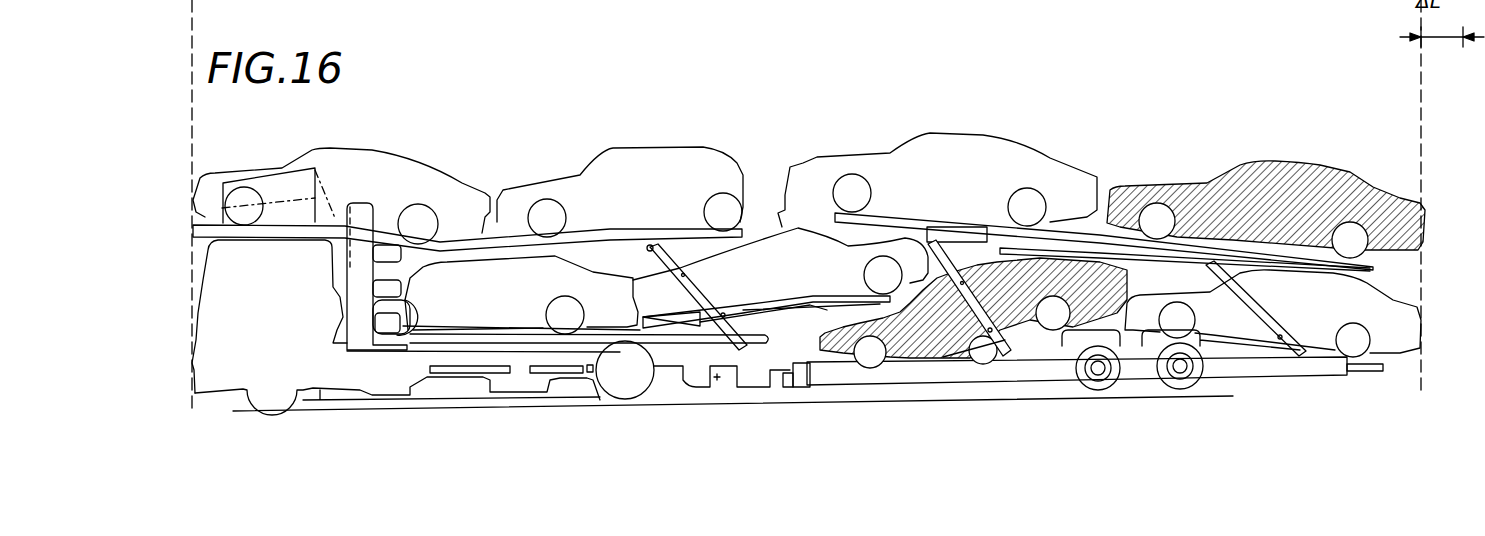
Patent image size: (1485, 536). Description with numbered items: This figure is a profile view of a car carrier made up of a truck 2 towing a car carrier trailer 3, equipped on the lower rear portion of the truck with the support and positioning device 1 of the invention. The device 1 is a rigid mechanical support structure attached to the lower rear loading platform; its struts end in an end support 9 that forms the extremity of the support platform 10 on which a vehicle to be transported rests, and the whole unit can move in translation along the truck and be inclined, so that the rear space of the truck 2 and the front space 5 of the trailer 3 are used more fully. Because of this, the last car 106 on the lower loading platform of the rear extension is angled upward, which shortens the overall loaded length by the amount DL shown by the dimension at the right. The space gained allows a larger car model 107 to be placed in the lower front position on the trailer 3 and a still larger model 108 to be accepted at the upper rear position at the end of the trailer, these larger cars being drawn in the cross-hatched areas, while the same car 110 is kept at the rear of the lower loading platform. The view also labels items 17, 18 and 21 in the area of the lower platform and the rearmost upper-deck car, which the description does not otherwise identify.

The support and positioning device 1 is at (793, 291).
The truck 2 is at (272, 393).
The car carrier trailer 3 is at (864, 378).
The front space 5 is at (804, 328).
The end support 9 is at (853, 294).
The support platform 10 is at (813, 294).
The lower loading deck 17 is at (561, 344).
The lower loading deck support 18 is at (775, 329).
The vehicle on loading ramp 21 is at (755, 253).
The last car 106 is at (560, 194).
The larger vehicle 107 is at (1010, 313).
The still larger vehicle 108 is at (1312, 180).
The rear car 110 is at (1390, 336).